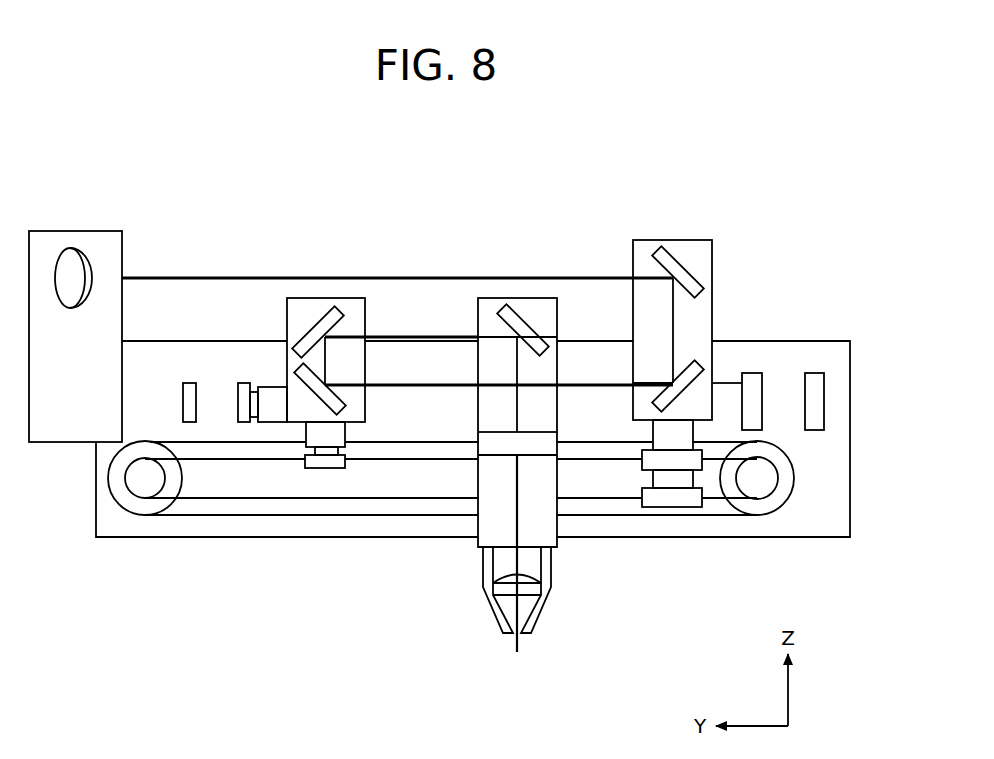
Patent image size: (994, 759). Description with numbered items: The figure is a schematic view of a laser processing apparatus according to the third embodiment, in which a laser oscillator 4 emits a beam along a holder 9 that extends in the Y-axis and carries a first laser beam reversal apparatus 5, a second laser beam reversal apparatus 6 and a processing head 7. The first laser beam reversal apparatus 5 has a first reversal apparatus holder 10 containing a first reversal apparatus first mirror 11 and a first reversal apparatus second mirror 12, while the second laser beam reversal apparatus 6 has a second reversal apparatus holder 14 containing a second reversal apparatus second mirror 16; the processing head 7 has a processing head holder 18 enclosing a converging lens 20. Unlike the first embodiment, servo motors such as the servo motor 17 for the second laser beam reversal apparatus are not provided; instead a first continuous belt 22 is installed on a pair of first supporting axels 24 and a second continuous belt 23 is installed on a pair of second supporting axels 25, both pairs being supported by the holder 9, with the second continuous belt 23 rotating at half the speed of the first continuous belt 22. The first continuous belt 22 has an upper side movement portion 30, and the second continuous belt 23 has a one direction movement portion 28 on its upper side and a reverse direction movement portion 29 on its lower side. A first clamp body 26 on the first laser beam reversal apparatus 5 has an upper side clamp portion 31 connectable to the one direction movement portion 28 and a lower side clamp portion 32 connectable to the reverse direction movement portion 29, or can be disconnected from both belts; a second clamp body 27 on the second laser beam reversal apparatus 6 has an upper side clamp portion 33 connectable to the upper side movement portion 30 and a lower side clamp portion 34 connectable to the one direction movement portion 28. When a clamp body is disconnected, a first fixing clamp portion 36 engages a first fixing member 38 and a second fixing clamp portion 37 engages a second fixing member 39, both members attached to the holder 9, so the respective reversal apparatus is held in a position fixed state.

The laser oscillator 4 is at (102, 241).
The first laser beam reversal apparatus 5 is at (707, 302).
The second laser beam reversal apparatus 6 is at (322, 318).
The processing head 7 is at (642, 384).
The holder 9 is at (522, 322).
The first reversal apparatus holder 10 is at (673, 240).
The first reversal apparatus first mirror 11 is at (690, 283).
The first reversal apparatus second mirror 12 is at (700, 370).
The second reversal apparatus holder 14 is at (340, 296).
The second reversal apparatus second mirror 16 is at (308, 327).
The servo motor for the second laser beam reversal apparatus 17 is at (320, 380).
The processing head holder 18 is at (493, 296).
The converging lens 20 is at (498, 586).
The first continuous belt 22 is at (250, 518).
The second continuous belt 23 is at (283, 498).
The first supporting axels 24 is at (142, 508).
The second supporting axels 25 is at (133, 480).
The first clamp body 26 is at (640, 480).
The second clamp body 27 is at (352, 478).
The one direction movement portion 28 is at (205, 458).
The reverse direction movement portion 29 is at (225, 492).
The upper side movement portion 30 is at (178, 442).
The upper side clamp portion of the first clamp body 31 is at (696, 464).
The lower side clamp portion of the first clamp body 32 is at (668, 500).
The upper side clamp portion of the second clamp body 33 is at (340, 432).
The lower side clamp portion of the second clamp body 34 is at (326, 440).
The first fixing clamp portion 36 is at (762, 402).
The second fixing clamp portion 37 is at (244, 384).
The first fixing member 38 is at (815, 373).
The second fixing member 39 is at (189, 384).